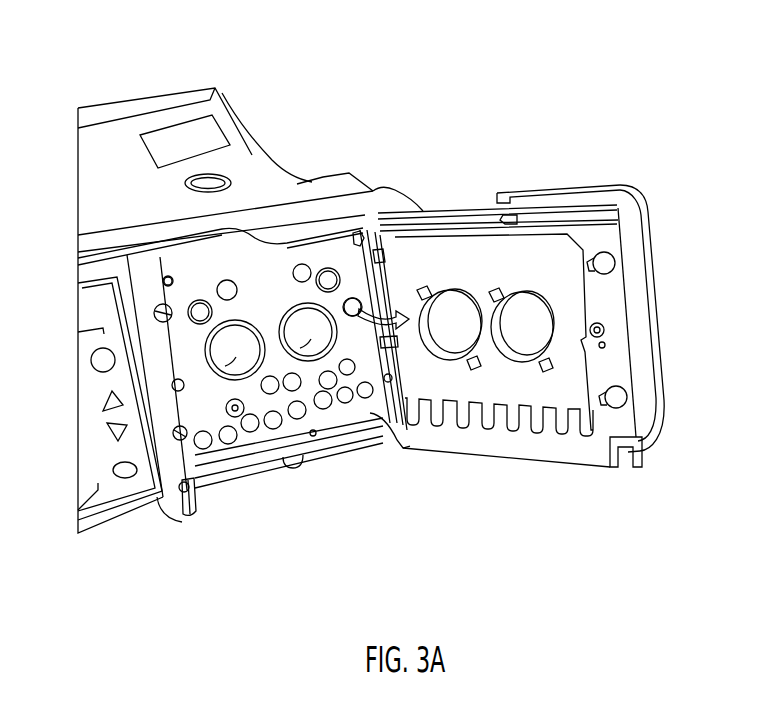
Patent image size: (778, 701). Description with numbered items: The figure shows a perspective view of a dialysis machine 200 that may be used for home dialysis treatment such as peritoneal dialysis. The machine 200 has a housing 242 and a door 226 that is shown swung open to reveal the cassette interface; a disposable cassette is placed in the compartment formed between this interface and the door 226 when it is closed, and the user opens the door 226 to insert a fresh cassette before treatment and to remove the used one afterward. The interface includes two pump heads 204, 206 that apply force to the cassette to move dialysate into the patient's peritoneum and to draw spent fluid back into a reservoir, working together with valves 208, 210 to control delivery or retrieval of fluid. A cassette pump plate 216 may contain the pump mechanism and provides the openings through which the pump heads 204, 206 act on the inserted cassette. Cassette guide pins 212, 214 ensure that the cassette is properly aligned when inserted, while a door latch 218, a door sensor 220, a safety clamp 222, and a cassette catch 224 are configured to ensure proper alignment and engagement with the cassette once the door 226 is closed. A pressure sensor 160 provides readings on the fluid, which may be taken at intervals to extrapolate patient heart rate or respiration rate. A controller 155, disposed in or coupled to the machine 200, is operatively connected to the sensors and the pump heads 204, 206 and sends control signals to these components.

The dialysis machine 200 is at (697, 143).
The controller 155 is at (207, 110).
The cassette guide pin 212 is at (169, 279).
The cassette guide pin 214 is at (355, 232).
The cassette pump plate 216 is at (365, 238).
The door latch 218 is at (597, 186).
The housing 242 is at (107, 198).
The door sensor 220 is at (178, 382).
The door 226 is at (647, 403).
The pump head 204 is at (318, 330).
The pump head 206 is at (393, 443).
The valve 208 is at (212, 330).
The valve 210 is at (262, 360).
The cassette catch 224 is at (313, 435).
The pressure sensor 160 is at (236, 413).
The safety clamp 222 is at (190, 522).